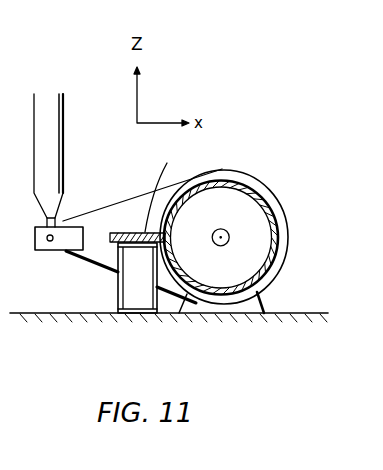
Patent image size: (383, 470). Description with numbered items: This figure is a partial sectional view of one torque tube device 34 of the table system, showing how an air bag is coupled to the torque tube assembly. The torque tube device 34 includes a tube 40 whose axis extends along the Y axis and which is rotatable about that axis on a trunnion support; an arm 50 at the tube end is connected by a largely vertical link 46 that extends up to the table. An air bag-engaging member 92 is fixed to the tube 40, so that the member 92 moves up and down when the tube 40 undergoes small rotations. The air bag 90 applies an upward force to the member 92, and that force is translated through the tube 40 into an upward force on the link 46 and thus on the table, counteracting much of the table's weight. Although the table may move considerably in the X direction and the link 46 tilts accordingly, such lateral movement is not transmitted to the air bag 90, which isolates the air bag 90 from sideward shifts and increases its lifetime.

The torque tube device 34 is at (287, 232).
The tube 40 is at (279, 258).
The link 46 is at (55, 162).
The arm 50 is at (133, 198).
The air bag 90 is at (131, 298).
The air bag-engaging member 92 is at (166, 188).